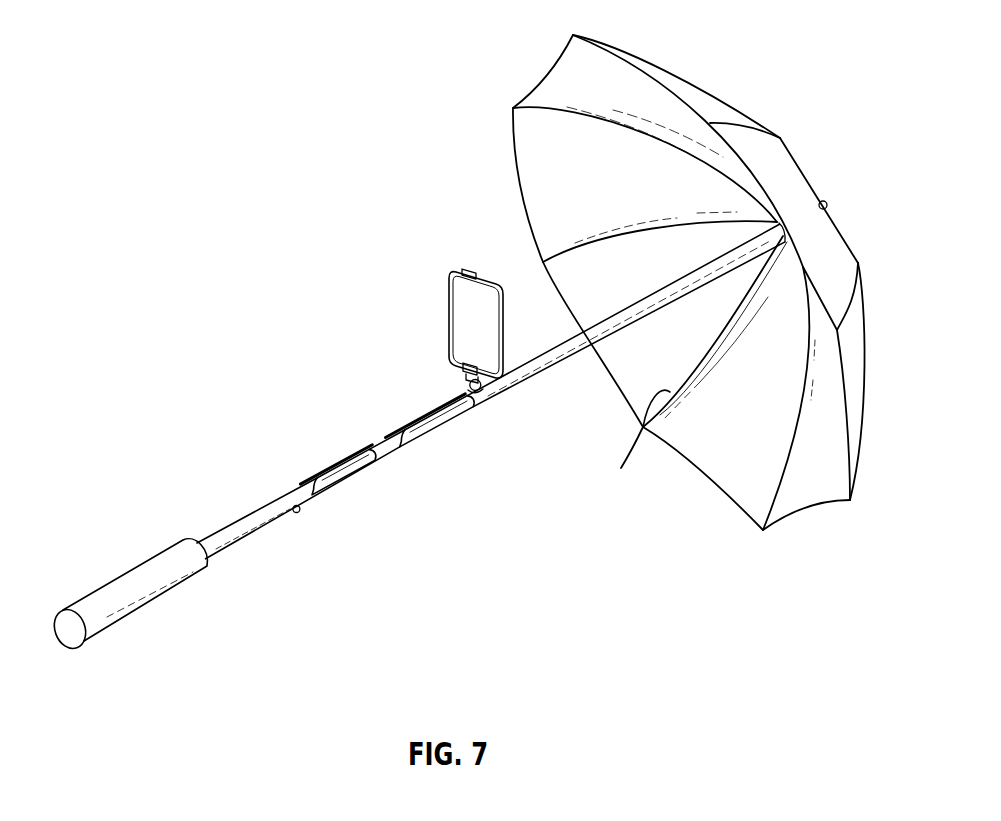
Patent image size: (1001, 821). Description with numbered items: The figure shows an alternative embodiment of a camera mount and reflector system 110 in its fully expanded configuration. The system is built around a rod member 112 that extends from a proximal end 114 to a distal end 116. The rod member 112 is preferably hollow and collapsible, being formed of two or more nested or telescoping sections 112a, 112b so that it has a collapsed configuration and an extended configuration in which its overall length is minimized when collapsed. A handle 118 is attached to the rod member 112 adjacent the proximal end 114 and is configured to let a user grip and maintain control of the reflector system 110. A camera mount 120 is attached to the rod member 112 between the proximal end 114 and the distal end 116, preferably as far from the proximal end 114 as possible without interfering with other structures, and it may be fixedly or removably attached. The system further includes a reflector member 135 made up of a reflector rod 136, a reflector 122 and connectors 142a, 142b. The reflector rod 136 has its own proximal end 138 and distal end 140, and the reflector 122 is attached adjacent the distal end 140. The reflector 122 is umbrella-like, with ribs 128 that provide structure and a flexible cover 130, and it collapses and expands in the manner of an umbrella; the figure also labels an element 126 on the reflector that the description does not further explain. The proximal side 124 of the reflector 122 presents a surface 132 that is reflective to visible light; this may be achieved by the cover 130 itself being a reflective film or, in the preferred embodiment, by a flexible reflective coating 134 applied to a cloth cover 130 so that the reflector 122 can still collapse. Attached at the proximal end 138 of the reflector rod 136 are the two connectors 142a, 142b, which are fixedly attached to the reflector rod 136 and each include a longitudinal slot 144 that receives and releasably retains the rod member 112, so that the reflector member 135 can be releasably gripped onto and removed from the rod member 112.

The camera mount and reflector system 110 is at (320, 233).
The rod member 112 is at (252, 535).
The telescoping section 112a is at (258, 502).
The telescoping section 112b is at (380, 440).
The proximal end 114 is at (60, 612).
The distal end 116 is at (498, 382).
The handle 118 is at (157, 562).
The camera mount 120 is at (447, 316).
The reflector 122 is at (680, 73).
The proximal side 124 is at (730, 478).
The canopy edge 126 is at (872, 282).
The ribs 128 is at (650, 443).
The flexible cover 130 is at (823, 237).
The reflective surface 132 is at (557, 80).
The reflective coating 134 is at (547, 168).
The reflector member 135 is at (780, 76).
The reflector rod 136 is at (548, 380).
The proximal end 138 is at (296, 514).
The distal end 140 is at (828, 207).
The connector 142a is at (338, 490).
The connector 142b is at (428, 436).
The longitudinal slot 144 is at (418, 400).